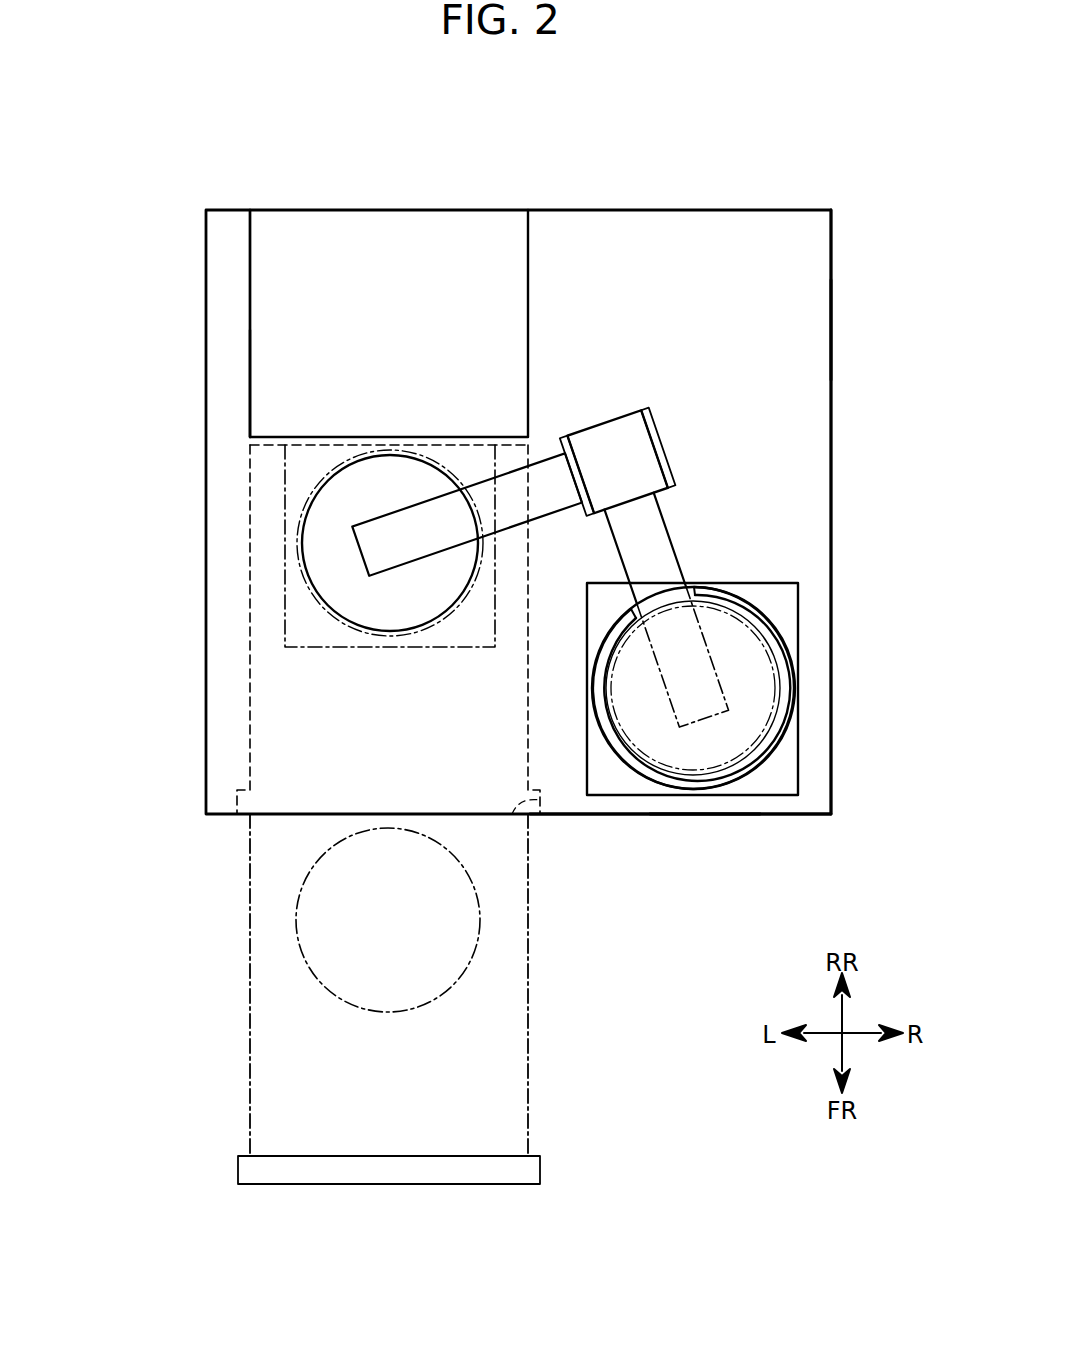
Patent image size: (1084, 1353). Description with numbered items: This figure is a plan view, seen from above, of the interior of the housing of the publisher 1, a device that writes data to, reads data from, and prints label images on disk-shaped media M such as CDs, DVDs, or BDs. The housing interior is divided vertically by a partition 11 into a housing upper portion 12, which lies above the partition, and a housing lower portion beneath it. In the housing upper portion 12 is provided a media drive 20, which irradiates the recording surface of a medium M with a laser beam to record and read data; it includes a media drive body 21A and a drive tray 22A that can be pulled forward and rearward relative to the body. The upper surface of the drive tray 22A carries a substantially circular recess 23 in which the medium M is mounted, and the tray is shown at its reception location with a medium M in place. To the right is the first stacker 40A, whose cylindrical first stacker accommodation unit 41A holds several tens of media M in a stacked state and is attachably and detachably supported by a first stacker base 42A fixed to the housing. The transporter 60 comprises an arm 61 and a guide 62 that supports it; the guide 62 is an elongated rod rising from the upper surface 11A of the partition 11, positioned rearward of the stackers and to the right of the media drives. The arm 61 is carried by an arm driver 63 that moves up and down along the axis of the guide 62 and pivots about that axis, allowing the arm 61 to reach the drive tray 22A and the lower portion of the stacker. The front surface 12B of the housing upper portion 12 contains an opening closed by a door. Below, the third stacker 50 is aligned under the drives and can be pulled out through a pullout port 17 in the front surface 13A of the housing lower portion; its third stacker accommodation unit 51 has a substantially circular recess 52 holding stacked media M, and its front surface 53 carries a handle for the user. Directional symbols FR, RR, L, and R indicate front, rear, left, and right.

The publisher 1 is at (614, 186).
The partition 11 is at (729, 303).
The upper surface of the partition 11A is at (784, 304).
The housing upper portion 12 is at (831, 242).
The front surface of the housing upper portion 12B is at (690, 817).
The front surface of the housing lower portion 13A is at (628, 817).
The pullout port 17 is at (540, 800).
The media drive 20 is at (262, 315).
The media drive body 21A is at (250, 412).
The drive tray 22A is at (284, 478).
The recess 23 is at (264, 508).
The medium M is at (305, 540).
The first stacker 40A is at (799, 684).
The first stacker accommodation unit 41A is at (787, 635).
The first stacker base 42A is at (778, 583).
The third stacker 50 is at (412, 1043).
The third stacker accommodation unit 51 is at (284, 1098).
The recess 52 is at (471, 941).
The front surface of the third stacker 53 is at (368, 1186).
The transporter 60 is at (607, 547).
The arm 61 is at (549, 503).
The guide 62 is at (605, 421).
The arm driver 63 is at (660, 418).